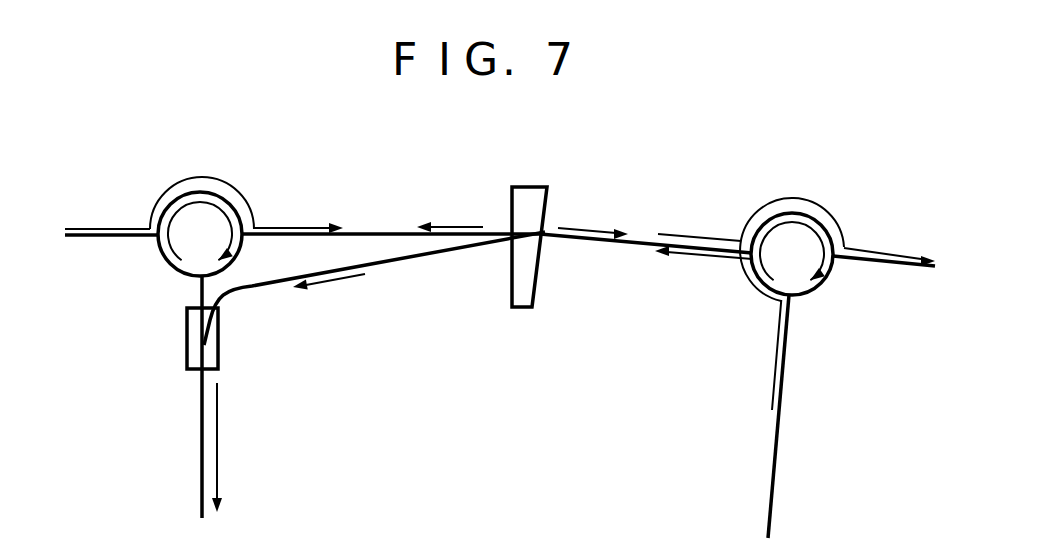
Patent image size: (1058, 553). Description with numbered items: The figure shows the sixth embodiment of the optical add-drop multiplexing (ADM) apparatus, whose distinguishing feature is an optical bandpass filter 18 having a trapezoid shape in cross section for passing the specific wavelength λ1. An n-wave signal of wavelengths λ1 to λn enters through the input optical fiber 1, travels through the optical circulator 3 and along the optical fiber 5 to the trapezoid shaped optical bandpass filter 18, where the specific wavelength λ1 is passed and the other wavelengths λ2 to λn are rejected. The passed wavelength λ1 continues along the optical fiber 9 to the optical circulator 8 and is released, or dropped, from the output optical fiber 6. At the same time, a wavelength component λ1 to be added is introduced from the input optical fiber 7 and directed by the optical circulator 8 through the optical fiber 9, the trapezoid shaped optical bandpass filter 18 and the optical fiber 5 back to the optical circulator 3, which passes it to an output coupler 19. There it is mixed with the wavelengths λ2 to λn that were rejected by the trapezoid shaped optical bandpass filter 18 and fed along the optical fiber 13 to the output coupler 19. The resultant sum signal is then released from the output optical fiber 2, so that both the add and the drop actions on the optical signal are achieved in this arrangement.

The input optical fiber 1 is at (113, 240).
The output optical fiber 2 is at (200, 443).
The optical circulator 3 is at (181, 279).
The optical fiber 5 is at (380, 231).
The output optical fiber 6 is at (900, 268).
The input optical fiber 7 is at (777, 460).
The optical circulator 8 is at (820, 288).
The optical fiber 9 is at (645, 239).
The optical fiber 13 is at (415, 259).
The optical bandpass filter 18 is at (522, 309).
The output coupler 19 is at (218, 350).